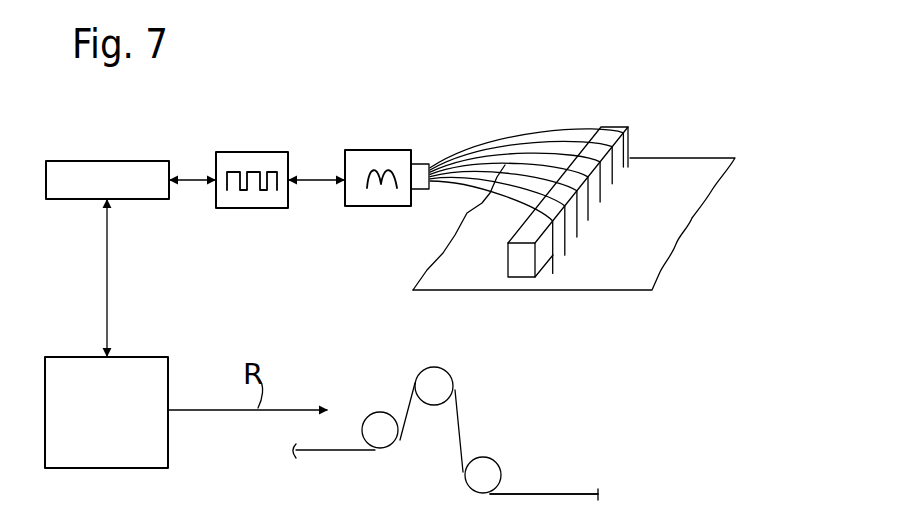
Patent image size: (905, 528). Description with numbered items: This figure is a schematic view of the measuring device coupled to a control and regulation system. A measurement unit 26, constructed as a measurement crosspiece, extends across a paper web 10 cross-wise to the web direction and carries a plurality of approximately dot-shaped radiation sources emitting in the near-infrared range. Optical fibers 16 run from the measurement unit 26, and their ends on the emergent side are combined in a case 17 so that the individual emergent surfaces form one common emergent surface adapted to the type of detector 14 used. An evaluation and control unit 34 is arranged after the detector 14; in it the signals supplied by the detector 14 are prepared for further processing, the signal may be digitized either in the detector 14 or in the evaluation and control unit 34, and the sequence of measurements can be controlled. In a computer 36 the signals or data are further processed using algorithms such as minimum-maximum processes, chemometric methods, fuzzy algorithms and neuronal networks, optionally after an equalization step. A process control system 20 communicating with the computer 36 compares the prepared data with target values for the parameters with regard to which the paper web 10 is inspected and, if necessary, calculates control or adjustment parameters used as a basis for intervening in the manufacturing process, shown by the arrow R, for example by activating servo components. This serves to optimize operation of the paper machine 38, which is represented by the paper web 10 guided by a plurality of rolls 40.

The paper web 10 is at (677, 225).
The detector 14 is at (363, 152).
The optical fiber 16 is at (545, 128).
The case 17 is at (427, 163).
The process control system 20 is at (137, 453).
The measurement unit 26 is at (627, 127).
The evaluation and control unit 34 is at (243, 152).
The computer 36 is at (83, 175).
The paper machine 38 is at (445, 420).
The rolls 40 is at (428, 380).